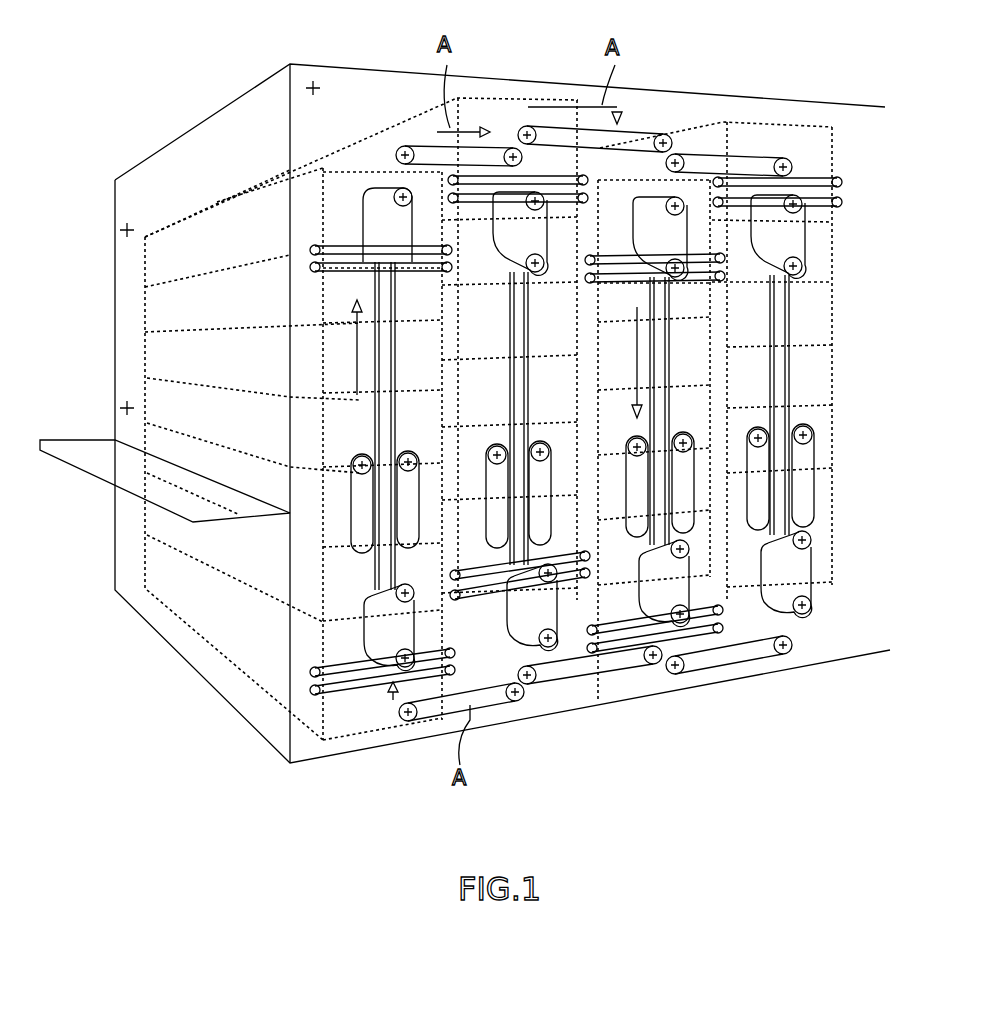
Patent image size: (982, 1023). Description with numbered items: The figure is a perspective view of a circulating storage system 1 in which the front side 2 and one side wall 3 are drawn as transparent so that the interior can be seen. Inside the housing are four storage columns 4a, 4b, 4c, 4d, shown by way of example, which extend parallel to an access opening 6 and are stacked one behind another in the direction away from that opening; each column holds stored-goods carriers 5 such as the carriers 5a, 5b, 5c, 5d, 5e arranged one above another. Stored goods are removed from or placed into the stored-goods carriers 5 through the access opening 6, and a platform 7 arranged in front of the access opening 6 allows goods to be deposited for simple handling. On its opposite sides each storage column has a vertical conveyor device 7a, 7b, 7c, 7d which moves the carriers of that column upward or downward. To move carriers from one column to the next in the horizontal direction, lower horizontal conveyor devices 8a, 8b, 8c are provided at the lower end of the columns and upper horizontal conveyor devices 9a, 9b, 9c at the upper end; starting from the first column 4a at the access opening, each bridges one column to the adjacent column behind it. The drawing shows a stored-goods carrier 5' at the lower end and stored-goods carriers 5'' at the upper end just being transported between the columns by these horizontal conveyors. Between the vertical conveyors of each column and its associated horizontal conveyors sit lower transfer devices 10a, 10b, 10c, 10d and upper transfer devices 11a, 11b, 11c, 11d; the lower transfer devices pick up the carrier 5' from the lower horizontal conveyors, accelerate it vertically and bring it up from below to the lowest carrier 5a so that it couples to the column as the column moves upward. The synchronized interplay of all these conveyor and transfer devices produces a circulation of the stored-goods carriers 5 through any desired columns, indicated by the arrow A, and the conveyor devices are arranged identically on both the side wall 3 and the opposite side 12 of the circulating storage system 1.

The circulating storage system 1 is at (153, 73).
The front side 2 is at (125, 232).
The side wall 3 is at (313, 84).
The storage column 4a is at (398, 766).
The storage column 4b is at (530, 741).
The storage column 4c is at (663, 717).
The storage column 4d is at (792, 692).
The stored-goods carriers 5 is at (514, 419).
The stored-goods carrier 5a is at (157, 267).
The stored-goods carrier 5b is at (160, 393).
The stored-goods carrier 5c is at (160, 357).
The stored-goods carrier 5d is at (160, 315).
The stored-goods carrier 5e is at (177, 452).
The stored-goods carrier at the lower end 5' is at (418, 666).
The stored-goods carrier at the upper end 5'' is at (629, 81).
The access opening 6 is at (130, 410).
The platform 7 is at (60, 450).
The vertical conveyor device 7a is at (356, 458).
The vertical conveyor device 7b is at (491, 453).
The vertical conveyor device 7c is at (628, 441).
The vertical conveyor device 7d is at (753, 428).
The lower horizontal conveyor device 8a is at (527, 706).
The lower horizontal conveyor device 8b is at (623, 678).
The lower horizontal conveyor device 8c is at (809, 645).
The upper horizontal conveyor device 9a is at (496, 147).
The upper horizontal conveyor device 9b is at (648, 129).
The upper horizontal conveyor device 9c is at (784, 151).
The lower transfer device 10a is at (344, 643).
The lower transfer device 10b is at (507, 648).
The lower transfer device 10c is at (690, 630).
The lower transfer device 10d is at (817, 568).
The upper transfer device 11a is at (383, 190).
The upper transfer device 11b is at (552, 233).
The upper transfer device 11c is at (686, 195).
The upper transfer device 11d is at (809, 240).
The side 12 is at (116, 221).